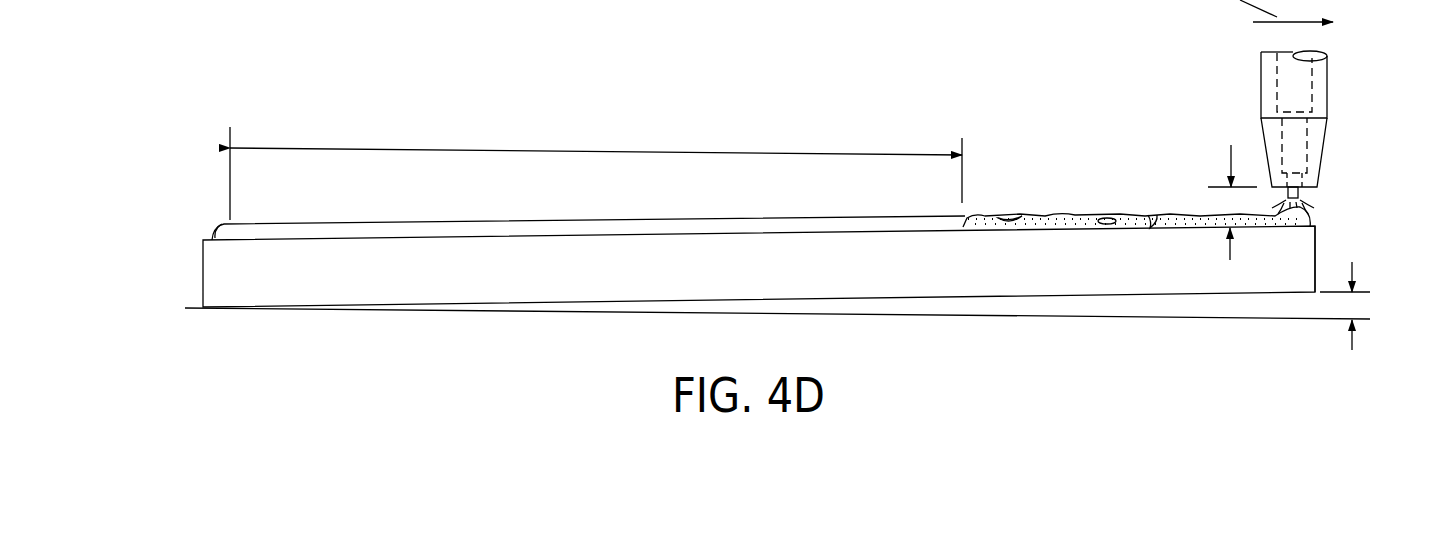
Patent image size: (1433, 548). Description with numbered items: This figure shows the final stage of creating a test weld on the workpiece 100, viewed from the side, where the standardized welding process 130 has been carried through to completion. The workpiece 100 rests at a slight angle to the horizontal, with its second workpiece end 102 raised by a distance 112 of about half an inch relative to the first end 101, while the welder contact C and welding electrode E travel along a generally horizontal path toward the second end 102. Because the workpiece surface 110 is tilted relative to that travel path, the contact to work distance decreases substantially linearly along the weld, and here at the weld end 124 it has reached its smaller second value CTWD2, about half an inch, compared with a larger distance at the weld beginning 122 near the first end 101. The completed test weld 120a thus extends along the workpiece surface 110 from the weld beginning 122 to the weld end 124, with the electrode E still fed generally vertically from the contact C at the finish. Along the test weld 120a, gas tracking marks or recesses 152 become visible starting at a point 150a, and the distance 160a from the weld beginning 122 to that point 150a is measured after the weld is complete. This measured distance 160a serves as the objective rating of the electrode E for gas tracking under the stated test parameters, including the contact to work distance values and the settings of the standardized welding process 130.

The workpiece 100 is at (591, 196).
The first end 101 is at (200, 271).
The second workpiece end 102 is at (1325, 249).
The workpiece surface 110 is at (497, 233).
The distance 112 is at (1352, 340).
The test weld 120a is at (333, 222).
The weld beginning 122 is at (218, 227).
The weld end 124 is at (1292, 225).
The standardized welding process 130 is at (1272, 198).
The point 150a is at (963, 230).
The gas tracking marks or recesses 152 is at (1015, 213).
The distance 160a is at (747, 153).
The welder contact C is at (1327, 78).
The welding electrode E is at (1303, 197).
The second contact to work distance CTWD2 is at (1230, 157).